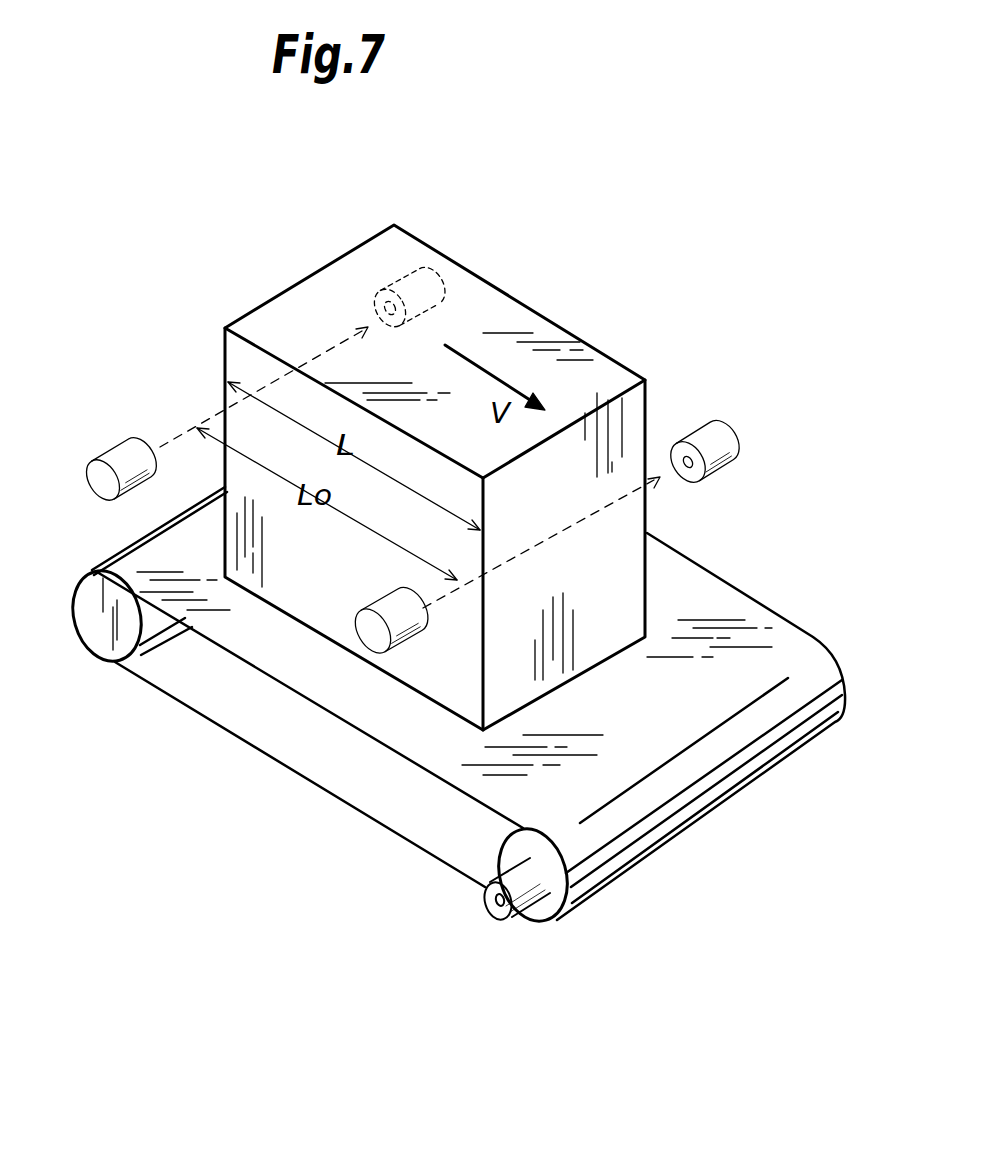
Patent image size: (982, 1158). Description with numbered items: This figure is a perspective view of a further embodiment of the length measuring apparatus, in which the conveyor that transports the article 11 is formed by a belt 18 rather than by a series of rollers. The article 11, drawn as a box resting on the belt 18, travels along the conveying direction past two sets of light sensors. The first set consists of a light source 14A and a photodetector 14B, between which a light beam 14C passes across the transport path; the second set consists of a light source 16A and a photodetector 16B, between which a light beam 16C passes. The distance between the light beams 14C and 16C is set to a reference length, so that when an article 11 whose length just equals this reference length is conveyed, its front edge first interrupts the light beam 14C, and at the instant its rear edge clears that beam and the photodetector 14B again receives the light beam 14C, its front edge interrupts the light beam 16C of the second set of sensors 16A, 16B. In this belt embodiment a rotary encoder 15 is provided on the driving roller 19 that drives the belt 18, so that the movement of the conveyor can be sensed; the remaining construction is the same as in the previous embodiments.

The article 11 is at (522, 322).
The light source 14A is at (120, 457).
The photodetector 14B is at (422, 275).
The light beam 14C is at (158, 440).
The rotary encoder 15 is at (503, 912).
The light source 16A is at (392, 607).
The photodetector 16B is at (717, 438).
The light beam 16C is at (598, 512).
The belt 18 is at (337, 697).
The driving roller 19 is at (510, 848).